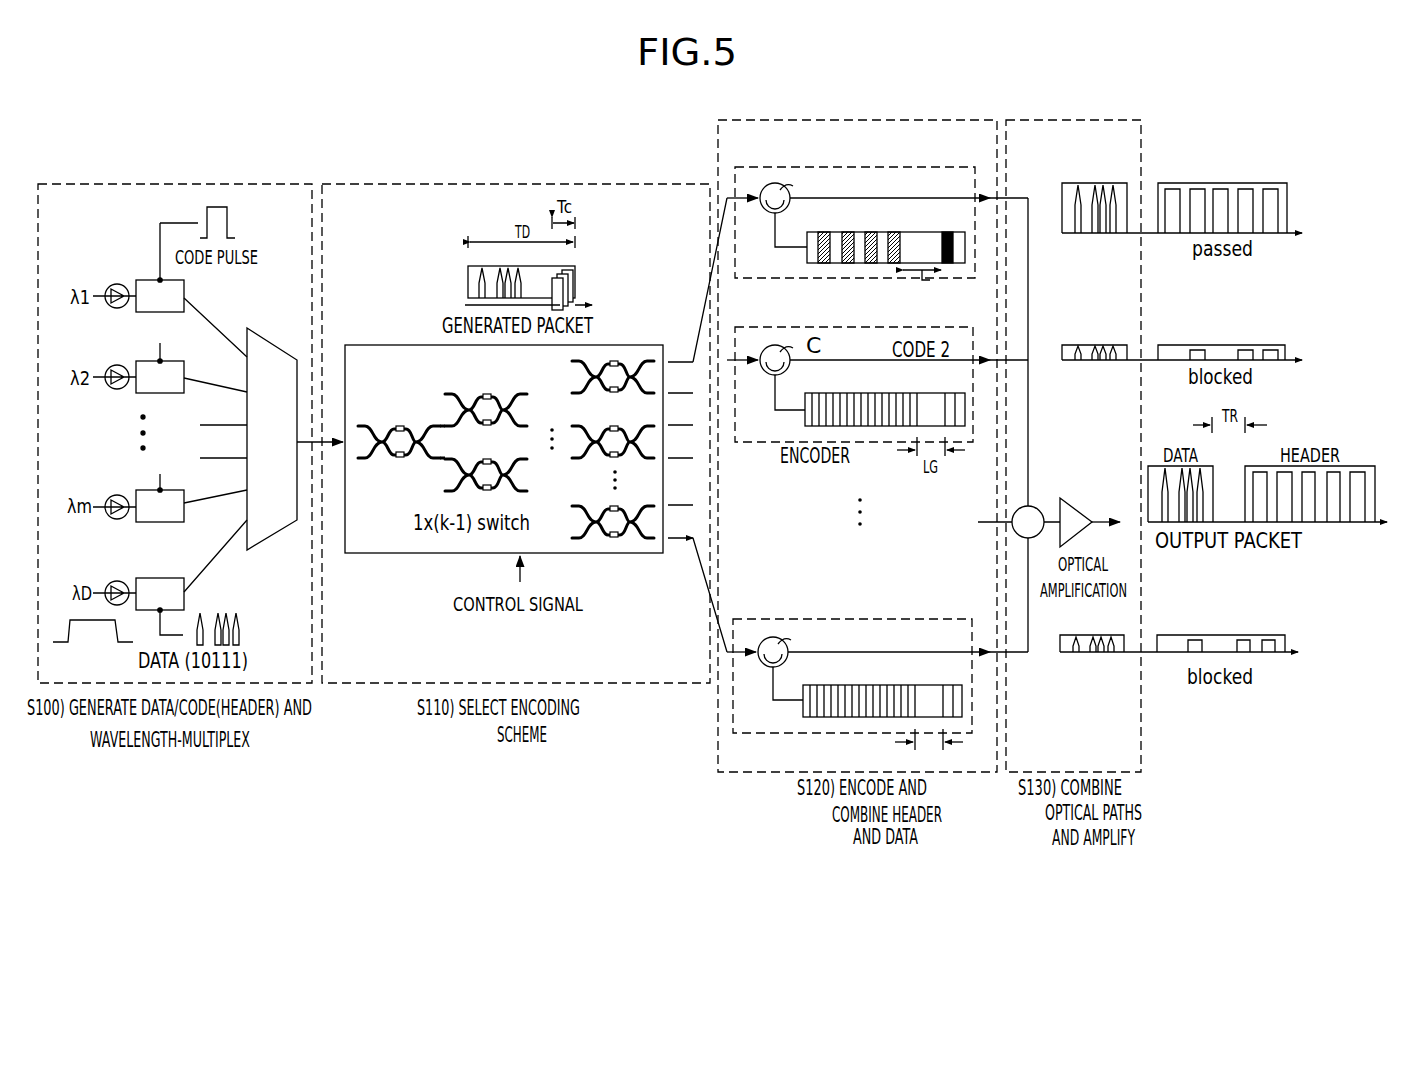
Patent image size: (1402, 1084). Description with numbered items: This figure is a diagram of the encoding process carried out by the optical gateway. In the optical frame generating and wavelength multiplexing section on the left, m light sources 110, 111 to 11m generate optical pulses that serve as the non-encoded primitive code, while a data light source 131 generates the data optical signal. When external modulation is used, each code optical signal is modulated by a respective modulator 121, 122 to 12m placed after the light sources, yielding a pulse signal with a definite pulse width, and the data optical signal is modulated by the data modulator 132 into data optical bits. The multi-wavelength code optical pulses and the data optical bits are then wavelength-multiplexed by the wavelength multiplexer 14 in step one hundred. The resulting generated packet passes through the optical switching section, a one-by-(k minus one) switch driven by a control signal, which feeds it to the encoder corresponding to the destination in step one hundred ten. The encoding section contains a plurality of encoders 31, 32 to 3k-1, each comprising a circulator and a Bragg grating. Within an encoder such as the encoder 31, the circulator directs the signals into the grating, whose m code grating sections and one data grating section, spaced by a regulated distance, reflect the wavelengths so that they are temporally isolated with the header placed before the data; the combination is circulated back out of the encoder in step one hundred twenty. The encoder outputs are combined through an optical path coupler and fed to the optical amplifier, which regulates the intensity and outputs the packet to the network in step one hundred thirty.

The light source 110 is at (118, 283).
The light source 111 is at (118, 364).
The light source 11m is at (118, 494).
The modulator 121 is at (186, 287).
The modulator 122 is at (186, 368).
The modulator 12m is at (186, 494).
The data light source 131 is at (118, 580).
The data modulator 132 is at (160, 577).
The wavelength multiplexer (WMUX) 14 is at (273, 339).
The encoder 31 is at (867, 167).
The encoder 32 is at (866, 327).
The encoder 3k-1 is at (862, 619).